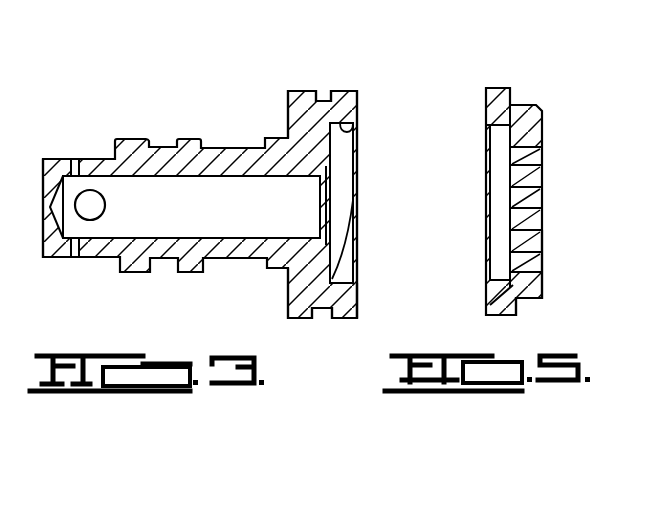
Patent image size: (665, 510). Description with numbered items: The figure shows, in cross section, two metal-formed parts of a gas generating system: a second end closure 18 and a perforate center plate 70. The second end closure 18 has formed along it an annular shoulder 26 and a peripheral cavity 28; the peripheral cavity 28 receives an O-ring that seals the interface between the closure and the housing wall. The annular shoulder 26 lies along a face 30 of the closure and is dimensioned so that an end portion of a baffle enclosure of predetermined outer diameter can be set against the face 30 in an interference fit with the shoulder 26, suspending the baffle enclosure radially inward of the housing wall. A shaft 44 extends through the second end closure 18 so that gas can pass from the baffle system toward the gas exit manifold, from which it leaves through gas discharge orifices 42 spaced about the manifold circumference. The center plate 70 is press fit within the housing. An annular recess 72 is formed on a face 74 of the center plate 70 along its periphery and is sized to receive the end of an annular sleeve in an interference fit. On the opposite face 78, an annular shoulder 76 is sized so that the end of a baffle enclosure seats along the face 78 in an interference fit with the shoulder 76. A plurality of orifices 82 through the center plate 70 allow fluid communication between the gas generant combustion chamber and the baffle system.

In FIG. 3, the second end closure 18 is at (284, 317).
In FIG. 3, the annular shoulder 26 is at (357, 133).
In FIG. 3, the peripheral cavity 28 is at (315, 97).
In FIG. 3, the face 30 is at (357, 240).
In FIG. 3, the gas discharge orifice 42 is at (90, 189).
In FIG. 3, the shaft 44 is at (209, 189).
In FIG. 5, the center plate 70 is at (584, 86).
In FIG. 5, the annular recess 72 is at (517, 308).
In FIG. 5, the face 74 is at (548, 274).
In FIG. 5, the annular shoulder 76 is at (499, 280).
In FIG. 5, the face 78 is at (504, 138).
In FIG. 5, the orifice 82 is at (547, 157).